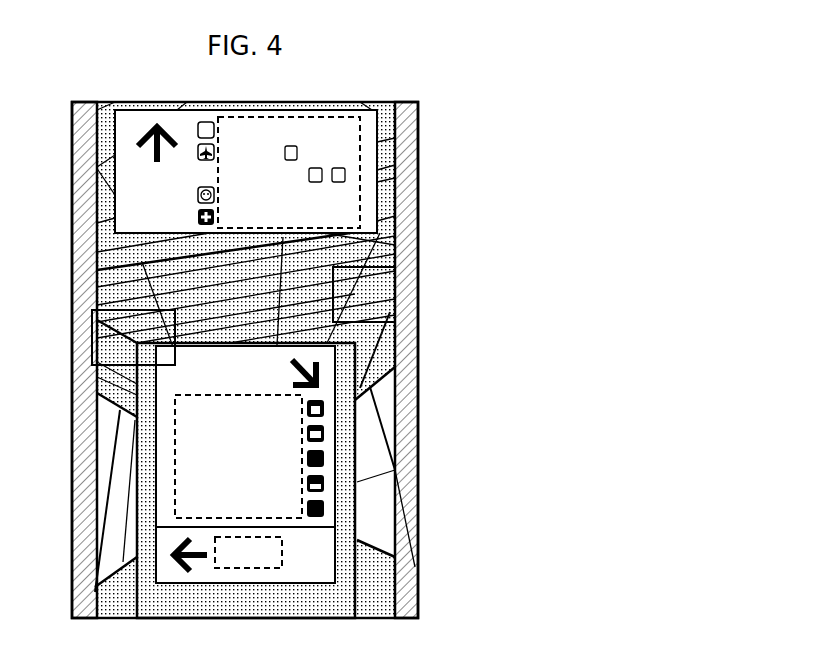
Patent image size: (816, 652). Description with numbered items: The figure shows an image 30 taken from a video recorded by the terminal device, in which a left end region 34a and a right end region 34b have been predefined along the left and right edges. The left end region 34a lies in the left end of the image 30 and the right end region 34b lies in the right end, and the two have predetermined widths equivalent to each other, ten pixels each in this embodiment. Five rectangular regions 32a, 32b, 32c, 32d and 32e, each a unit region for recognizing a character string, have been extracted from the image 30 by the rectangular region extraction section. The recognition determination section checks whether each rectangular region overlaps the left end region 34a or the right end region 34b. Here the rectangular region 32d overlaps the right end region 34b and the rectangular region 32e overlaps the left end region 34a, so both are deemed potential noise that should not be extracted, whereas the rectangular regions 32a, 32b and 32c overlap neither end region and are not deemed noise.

The image 30 is at (418, 136).
The rectangular region 32a is at (360, 174).
The rectangular region 32b is at (175, 458).
The rectangular region 32c is at (282, 555).
The rectangular region 32d is at (400, 265).
The rectangular region 32e is at (92, 342).
The left end region 34a is at (80, 102).
The right end region 34b is at (402, 102).